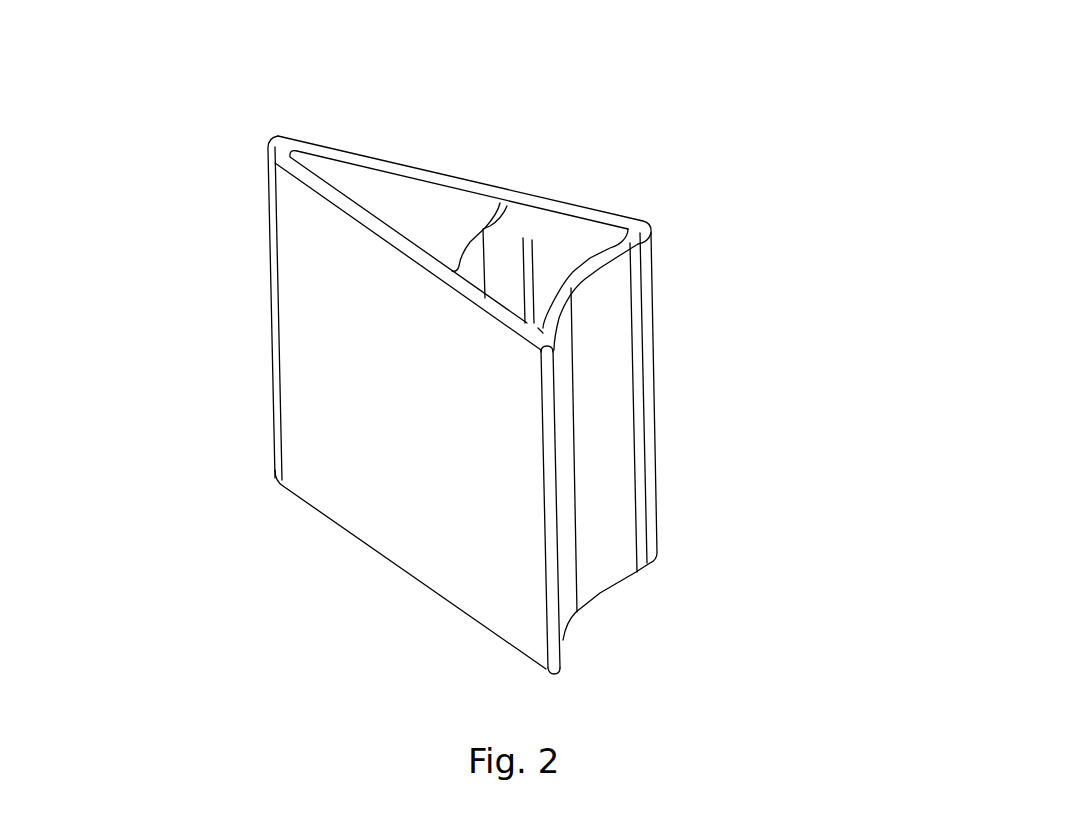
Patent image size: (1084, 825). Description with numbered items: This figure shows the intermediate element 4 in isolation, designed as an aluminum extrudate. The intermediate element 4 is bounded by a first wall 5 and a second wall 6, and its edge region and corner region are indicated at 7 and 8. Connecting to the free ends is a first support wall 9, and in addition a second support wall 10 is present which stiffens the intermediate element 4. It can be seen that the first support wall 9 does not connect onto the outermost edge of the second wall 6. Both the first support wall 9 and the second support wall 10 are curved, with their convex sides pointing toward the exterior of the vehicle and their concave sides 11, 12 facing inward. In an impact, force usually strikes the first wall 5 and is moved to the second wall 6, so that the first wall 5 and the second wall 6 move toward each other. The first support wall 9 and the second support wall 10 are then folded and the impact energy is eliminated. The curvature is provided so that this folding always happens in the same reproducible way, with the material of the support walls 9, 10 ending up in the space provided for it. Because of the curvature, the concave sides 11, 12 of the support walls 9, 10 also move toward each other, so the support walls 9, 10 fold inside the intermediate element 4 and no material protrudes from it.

The intermediate element 4 is at (802, 199).
The first wall 5 is at (464, 168).
The second wall 6 is at (364, 470).
The top edge flange 7 is at (340, 122).
The left side face 8 is at (273, 219).
The first support wall 9 is at (600, 284).
The second support wall 10 is at (514, 205).
The concave side 11 is at (624, 426).
The concave side 12 is at (521, 255).